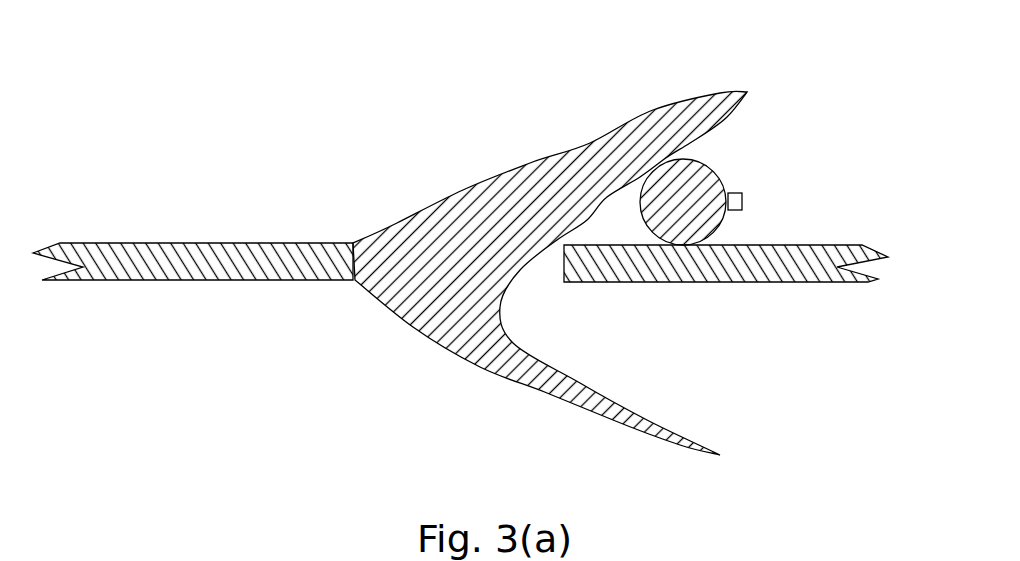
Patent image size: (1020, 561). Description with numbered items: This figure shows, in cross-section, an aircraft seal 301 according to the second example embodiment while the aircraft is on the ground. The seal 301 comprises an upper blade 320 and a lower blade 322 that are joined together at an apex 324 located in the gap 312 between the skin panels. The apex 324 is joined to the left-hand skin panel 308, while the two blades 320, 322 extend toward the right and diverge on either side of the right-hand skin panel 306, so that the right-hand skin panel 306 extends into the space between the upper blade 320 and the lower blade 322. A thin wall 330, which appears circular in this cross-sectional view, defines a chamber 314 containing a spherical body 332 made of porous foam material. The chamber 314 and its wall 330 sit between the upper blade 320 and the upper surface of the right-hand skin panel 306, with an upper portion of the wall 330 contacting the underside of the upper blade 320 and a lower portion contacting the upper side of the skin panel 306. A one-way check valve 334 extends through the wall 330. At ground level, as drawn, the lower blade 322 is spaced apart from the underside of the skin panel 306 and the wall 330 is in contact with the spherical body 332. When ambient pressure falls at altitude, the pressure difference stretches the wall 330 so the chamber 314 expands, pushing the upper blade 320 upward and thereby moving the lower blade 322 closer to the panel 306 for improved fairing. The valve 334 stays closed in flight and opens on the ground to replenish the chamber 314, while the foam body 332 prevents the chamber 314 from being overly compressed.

The seal 301 is at (393, 95).
The upper blade 320 is at (568, 190).
The lower blade 322 is at (573, 392).
The apex 324 is at (397, 280).
The gap 312 is at (538, 282).
The left-hand skin panel 308 is at (143, 267).
The right-hand skin panel 306 is at (787, 268).
The chamber 314 is at (715, 172).
The thin wall 330 is at (707, 160).
The one way check valve 334 is at (742, 197).
The spherical body 332 is at (743, 213).